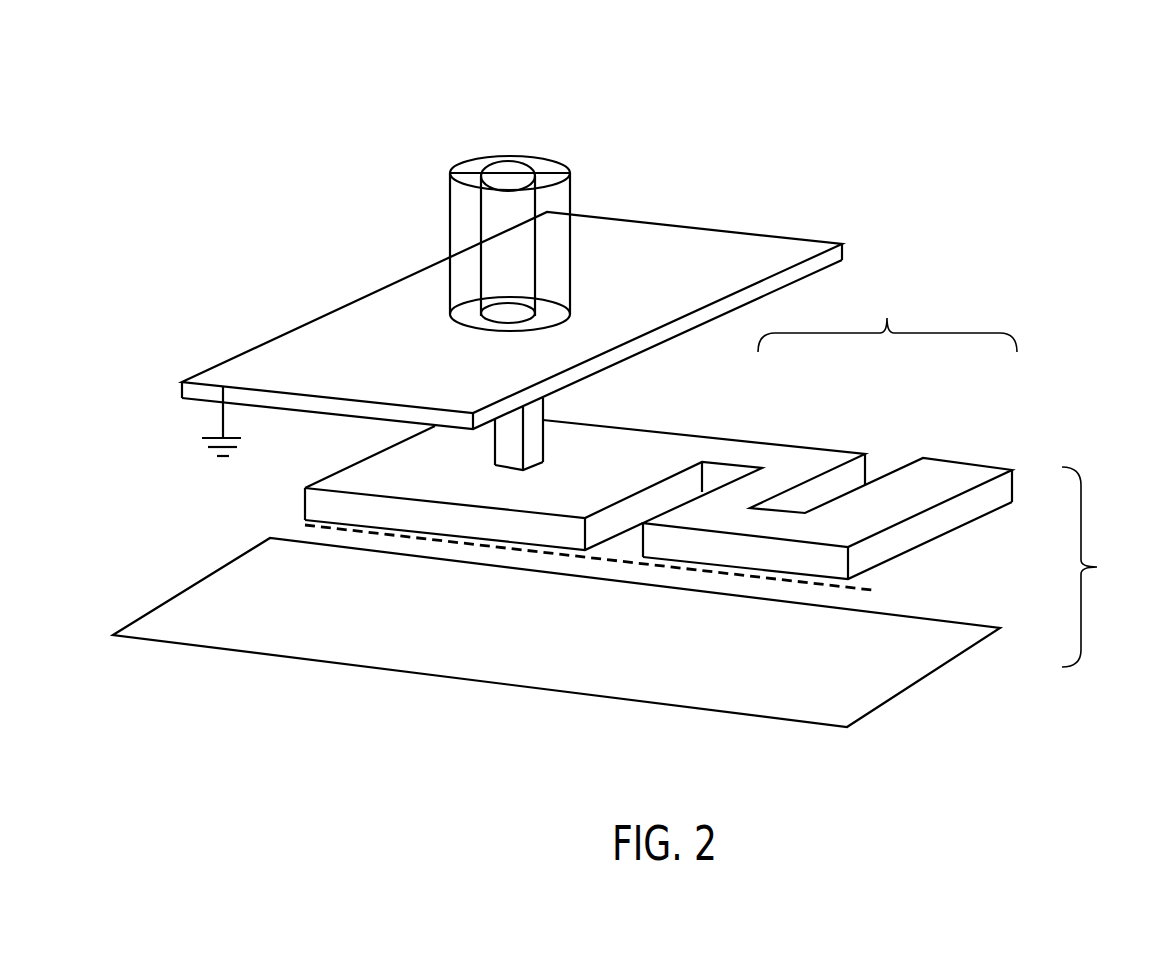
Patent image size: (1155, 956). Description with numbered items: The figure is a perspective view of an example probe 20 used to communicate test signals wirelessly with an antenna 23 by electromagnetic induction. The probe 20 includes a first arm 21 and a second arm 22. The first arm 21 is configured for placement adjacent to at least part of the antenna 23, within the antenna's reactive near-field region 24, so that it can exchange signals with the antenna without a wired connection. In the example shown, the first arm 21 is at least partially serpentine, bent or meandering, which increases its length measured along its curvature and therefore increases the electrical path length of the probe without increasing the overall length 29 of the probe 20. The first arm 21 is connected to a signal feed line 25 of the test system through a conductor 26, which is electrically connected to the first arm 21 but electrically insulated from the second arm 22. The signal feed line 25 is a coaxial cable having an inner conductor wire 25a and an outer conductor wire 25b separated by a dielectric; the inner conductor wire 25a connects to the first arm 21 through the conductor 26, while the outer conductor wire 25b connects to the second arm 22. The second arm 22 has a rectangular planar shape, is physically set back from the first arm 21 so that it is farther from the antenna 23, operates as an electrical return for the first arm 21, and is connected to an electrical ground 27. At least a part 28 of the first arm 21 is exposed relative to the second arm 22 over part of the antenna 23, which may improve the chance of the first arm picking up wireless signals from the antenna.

The probe 20 is at (216, 86).
The first arm 21 is at (823, 472).
The second arm 22 is at (379, 288).
The antenna 23 is at (425, 663).
The reactive near-field region 24 is at (1095, 567).
The signal feed line 25 is at (521, 211).
The inner conductor wire 25a is at (536, 206).
The outer conductor wire 25b is at (450, 226).
The conductor 26 is at (537, 420).
The electrical ground 27 is at (212, 452).
The exposed part of the first arm 28 is at (887, 315).
The overall length of probe 29 is at (877, 587).